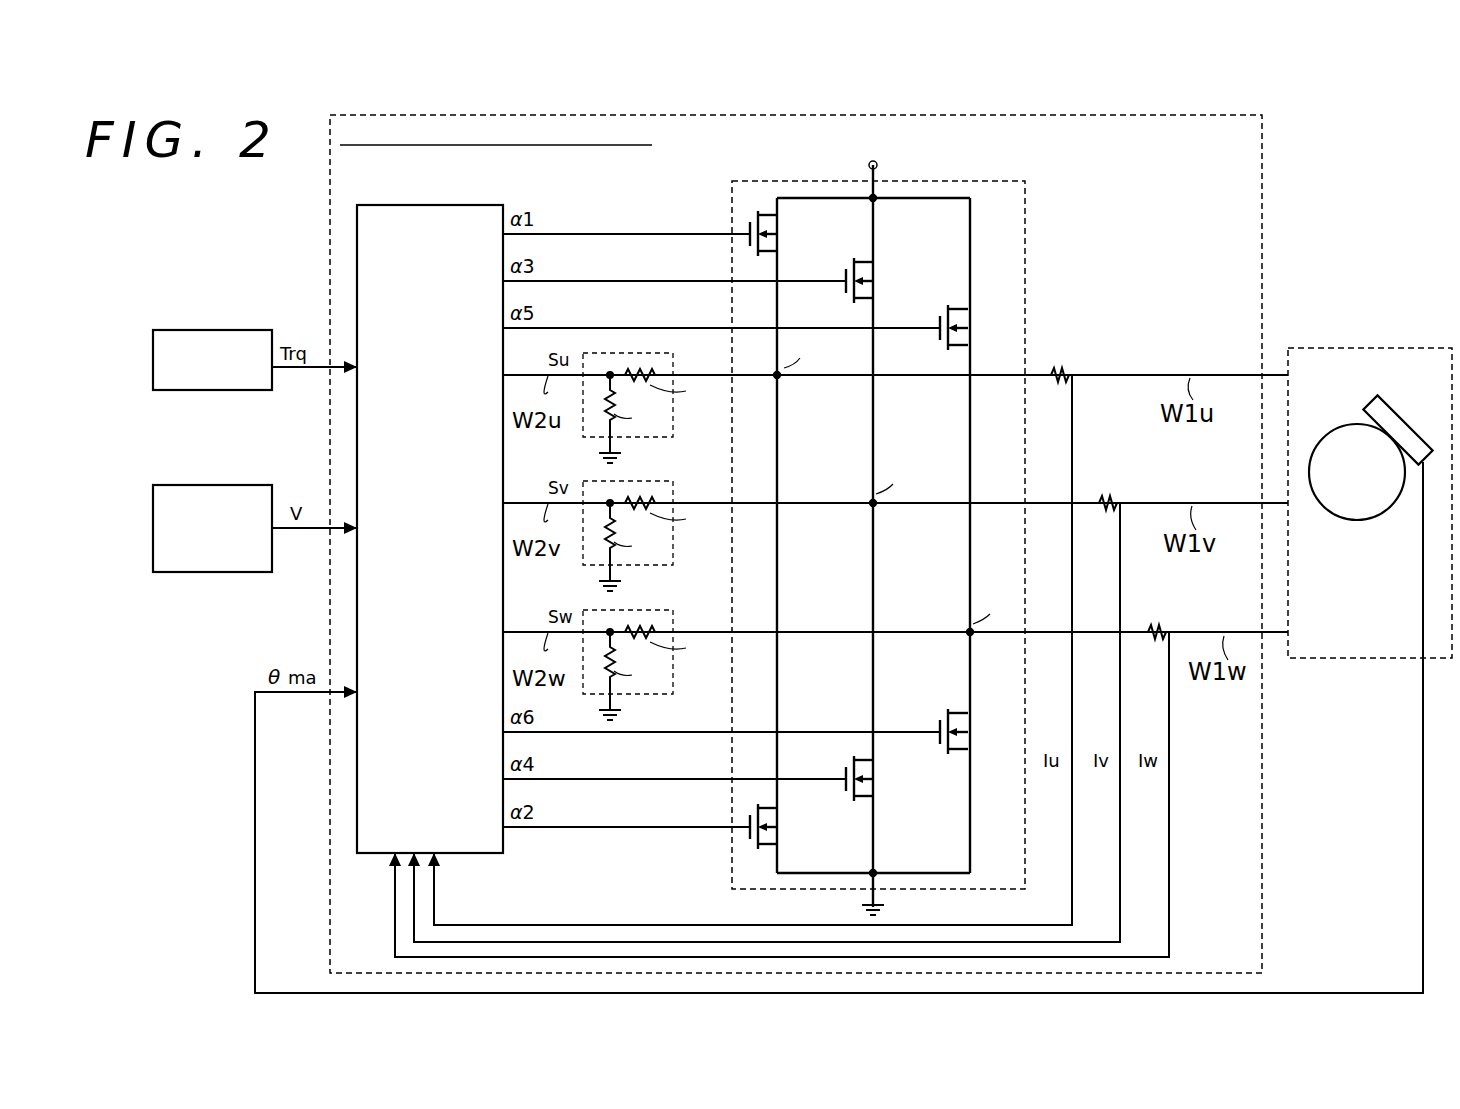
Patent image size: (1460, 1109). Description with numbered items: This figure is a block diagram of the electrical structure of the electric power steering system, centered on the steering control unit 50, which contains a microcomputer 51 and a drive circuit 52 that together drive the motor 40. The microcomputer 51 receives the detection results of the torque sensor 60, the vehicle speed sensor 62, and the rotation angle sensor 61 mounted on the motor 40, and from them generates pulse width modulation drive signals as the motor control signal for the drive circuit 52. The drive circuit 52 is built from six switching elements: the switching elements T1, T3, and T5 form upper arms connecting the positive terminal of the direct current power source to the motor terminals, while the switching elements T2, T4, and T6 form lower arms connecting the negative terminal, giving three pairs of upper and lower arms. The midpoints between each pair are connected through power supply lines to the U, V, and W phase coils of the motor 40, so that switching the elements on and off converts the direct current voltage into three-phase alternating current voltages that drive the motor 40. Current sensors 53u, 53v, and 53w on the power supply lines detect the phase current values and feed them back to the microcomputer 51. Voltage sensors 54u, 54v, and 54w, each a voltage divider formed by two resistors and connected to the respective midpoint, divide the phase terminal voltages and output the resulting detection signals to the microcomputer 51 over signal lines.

The motor 40 is at (1343, 425).
The steering control unit 50 is at (1265, 135).
The microcomputer 51 is at (428, 205).
The drive circuit 52 is at (1027, 215).
The current sensor 53u is at (1062, 370).
The current sensor 53v is at (1110, 498).
The current sensor 53w is at (1159, 627).
The voltage sensor 54u is at (640, 440).
The voltage sensor 54v is at (640, 568).
The voltage sensor 54w is at (640, 697).
The torque sensor 60 is at (214, 330).
The rotation angle sensor 61 is at (1410, 414).
The vehicle speed sensor 62 is at (213, 485).
The switching element T1 is at (744, 228).
The switching element T2 is at (744, 820).
The switching element T3 is at (840, 274).
The switching element T4 is at (840, 773).
The switching element T5 is at (934, 322).
The switching element T6 is at (934, 726).